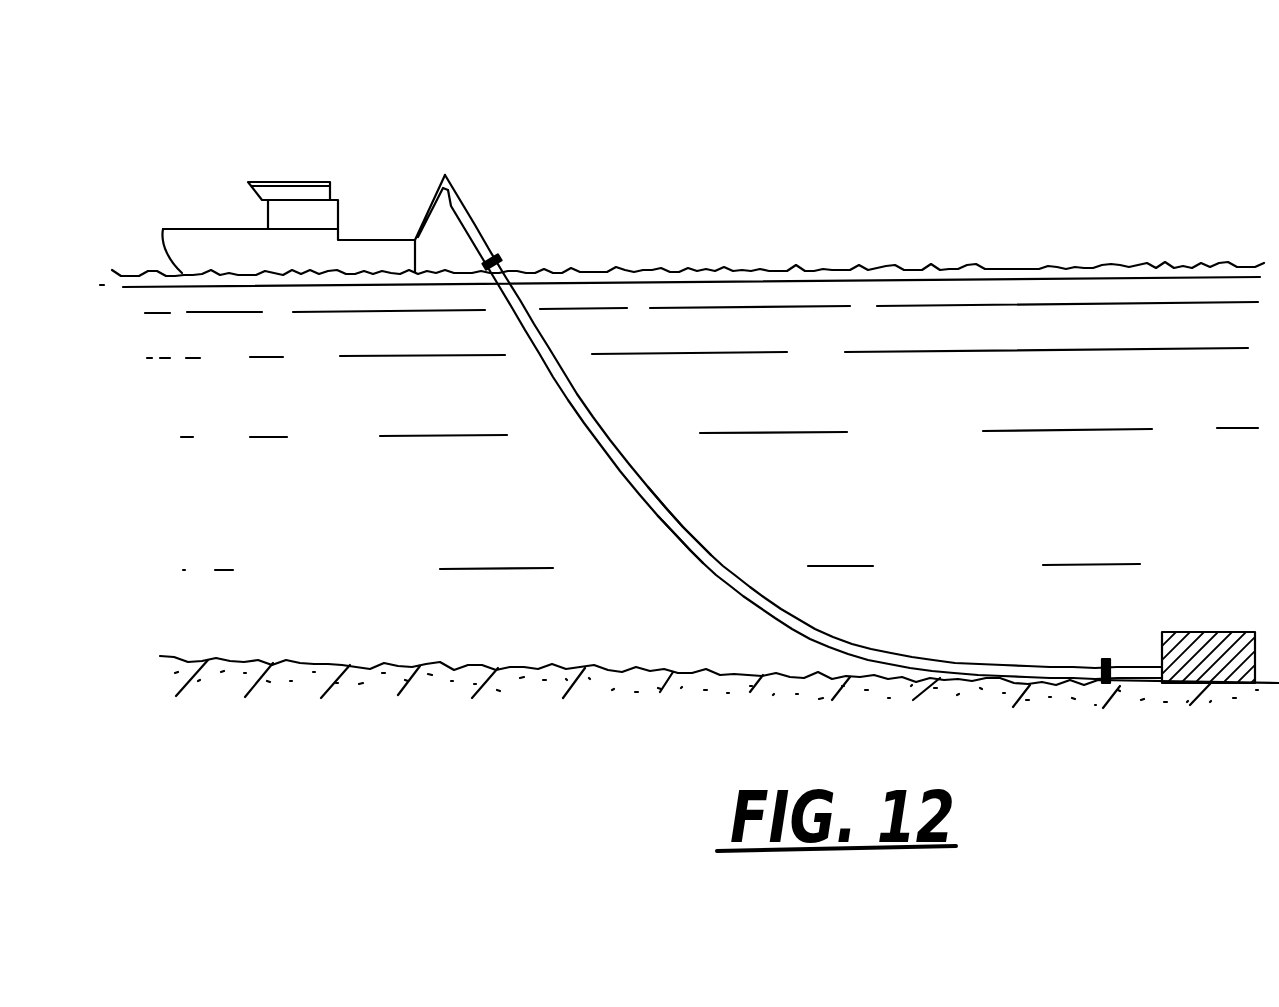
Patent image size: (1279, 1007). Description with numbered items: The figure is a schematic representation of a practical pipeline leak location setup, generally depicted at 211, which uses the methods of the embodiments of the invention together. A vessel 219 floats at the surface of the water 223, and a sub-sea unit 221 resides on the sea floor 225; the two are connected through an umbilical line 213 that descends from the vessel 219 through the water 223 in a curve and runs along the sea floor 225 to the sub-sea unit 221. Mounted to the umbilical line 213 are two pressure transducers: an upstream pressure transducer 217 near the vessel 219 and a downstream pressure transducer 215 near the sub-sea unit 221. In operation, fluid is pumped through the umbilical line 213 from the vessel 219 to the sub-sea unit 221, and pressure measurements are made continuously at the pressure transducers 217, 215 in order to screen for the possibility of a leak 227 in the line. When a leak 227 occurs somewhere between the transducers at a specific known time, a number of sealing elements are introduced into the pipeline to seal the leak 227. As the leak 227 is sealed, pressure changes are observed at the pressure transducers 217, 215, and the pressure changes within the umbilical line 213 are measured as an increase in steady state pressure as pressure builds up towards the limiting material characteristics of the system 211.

The practical setup 211 is at (661, 137).
The umbilical line 213 is at (590, 417).
The pressure transducer 215 is at (1103, 672).
The pressure transducer 217 is at (497, 260).
The vessel 219 is at (302, 215).
The sub-sea unit 221 is at (1215, 655).
The body of water 223 is at (367, 490).
The sea floor 225 is at (617, 733).
The leak 227 is at (686, 530).